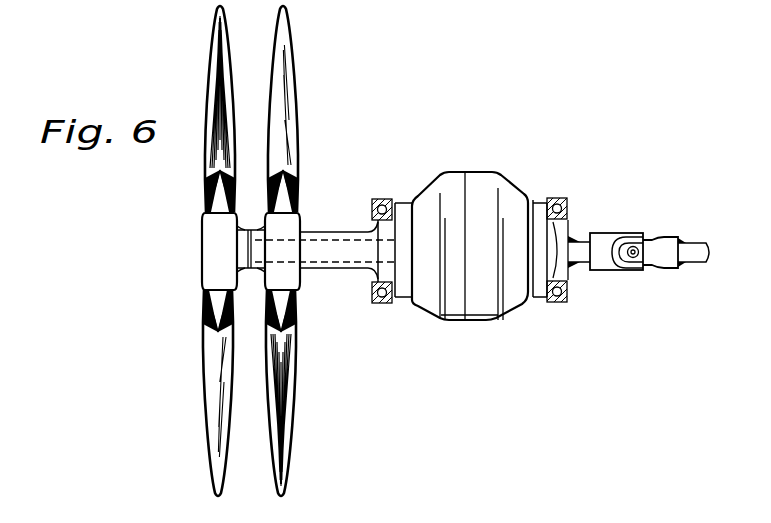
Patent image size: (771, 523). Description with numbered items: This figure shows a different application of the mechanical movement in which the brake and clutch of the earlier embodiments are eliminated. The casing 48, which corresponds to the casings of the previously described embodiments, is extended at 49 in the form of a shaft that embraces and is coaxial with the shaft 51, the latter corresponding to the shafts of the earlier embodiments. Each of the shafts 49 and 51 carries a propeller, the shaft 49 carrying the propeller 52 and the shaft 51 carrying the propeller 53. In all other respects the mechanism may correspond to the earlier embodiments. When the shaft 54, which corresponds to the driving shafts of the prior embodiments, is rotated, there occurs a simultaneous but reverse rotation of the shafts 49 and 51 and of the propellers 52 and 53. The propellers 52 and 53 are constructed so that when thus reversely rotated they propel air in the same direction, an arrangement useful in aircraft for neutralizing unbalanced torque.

The casing 48 is at (473, 182).
The shaft 49 is at (335, 233).
The shaft 51 is at (335, 263).
The propeller 52 is at (293, 133).
The propeller 53 is at (220, 133).
The shaft 54 is at (581, 258).